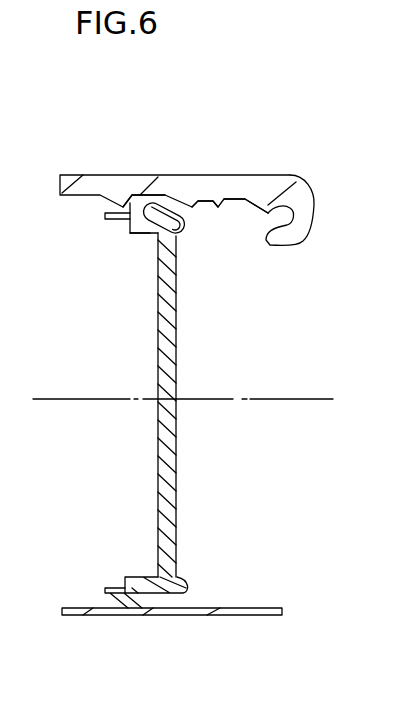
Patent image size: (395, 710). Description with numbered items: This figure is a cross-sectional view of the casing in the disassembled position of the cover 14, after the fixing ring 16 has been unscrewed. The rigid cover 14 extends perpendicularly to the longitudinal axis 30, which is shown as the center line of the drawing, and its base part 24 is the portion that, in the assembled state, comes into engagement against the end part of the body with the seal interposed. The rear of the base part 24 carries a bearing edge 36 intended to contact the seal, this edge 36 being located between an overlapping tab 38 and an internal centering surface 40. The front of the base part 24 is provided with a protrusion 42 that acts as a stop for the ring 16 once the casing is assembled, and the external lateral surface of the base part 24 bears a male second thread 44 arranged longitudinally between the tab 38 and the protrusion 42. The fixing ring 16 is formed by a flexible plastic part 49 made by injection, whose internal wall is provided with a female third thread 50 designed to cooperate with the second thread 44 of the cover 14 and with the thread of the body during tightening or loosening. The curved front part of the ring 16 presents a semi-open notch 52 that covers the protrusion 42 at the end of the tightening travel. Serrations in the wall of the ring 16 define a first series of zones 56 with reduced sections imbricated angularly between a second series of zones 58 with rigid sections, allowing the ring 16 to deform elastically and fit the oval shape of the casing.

The closing cover 14 is at (168, 320).
The fixing ring 16 is at (165, 173).
The base part 24 is at (118, 606).
The longitudinal axis 30 is at (208, 399).
The bearing edge 36 is at (114, 237).
The overlapping tab 38 is at (92, 219).
The internal centering surface 40 is at (137, 248).
The protrusion 42 is at (186, 582).
The male second thread 44 is at (190, 230).
The flexible plastic part 49 is at (163, 193).
The female third thread 50 is at (215, 205).
The semi-open notch 52 is at (288, 246).
The zones with reduced sections 56 is at (196, 612).
The zones with rigid sections 58 is at (210, 205).